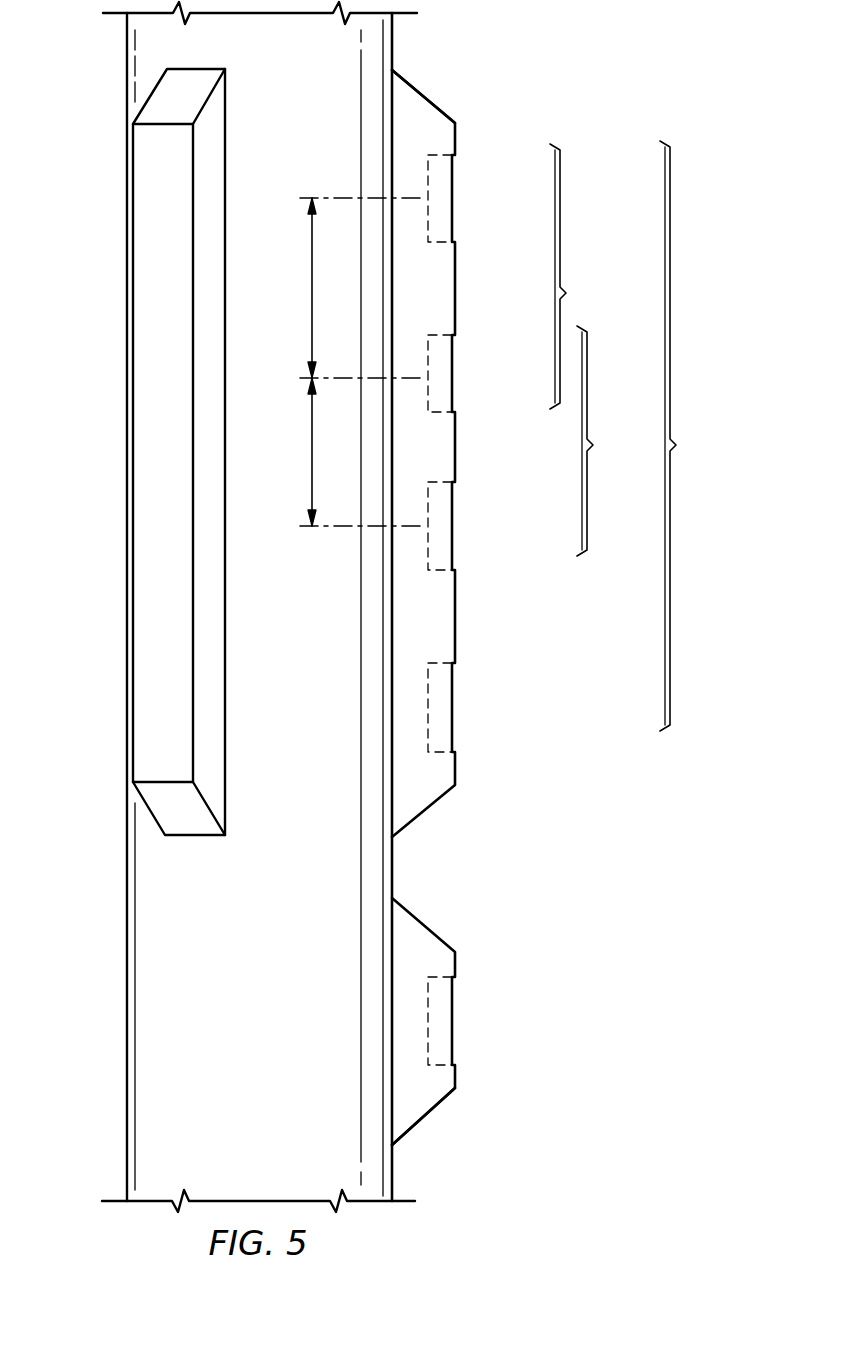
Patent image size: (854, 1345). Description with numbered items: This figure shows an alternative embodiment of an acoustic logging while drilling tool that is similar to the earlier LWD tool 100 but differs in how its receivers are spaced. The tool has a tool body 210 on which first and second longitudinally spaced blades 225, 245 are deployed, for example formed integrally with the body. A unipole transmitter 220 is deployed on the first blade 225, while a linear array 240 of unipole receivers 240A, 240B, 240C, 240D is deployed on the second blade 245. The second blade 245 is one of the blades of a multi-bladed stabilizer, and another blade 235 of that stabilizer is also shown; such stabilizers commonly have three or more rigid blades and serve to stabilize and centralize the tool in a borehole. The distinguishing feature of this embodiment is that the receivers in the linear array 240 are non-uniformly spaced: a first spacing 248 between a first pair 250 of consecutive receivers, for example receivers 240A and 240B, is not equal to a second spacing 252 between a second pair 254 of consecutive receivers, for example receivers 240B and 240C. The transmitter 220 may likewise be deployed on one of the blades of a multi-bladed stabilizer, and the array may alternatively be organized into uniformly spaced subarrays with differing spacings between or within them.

The LWD tool 100 is at (620, 95).
The tool body 210 is at (127, 982).
The unipole transmitter 220 is at (452, 1020).
The first blade 225 is at (425, 1118).
The blade 235 is at (210, 655).
The linear array 240 is at (553, 607).
The unipole receiver 240A is at (452, 180).
The unipole receiver 240B is at (452, 360).
The unipole receiver 240C is at (452, 547).
The unipole receiver 240D is at (452, 712).
The second blade 245 is at (423, 96).
The first spacing 248 is at (311, 295).
The first pair 250 is at (581, 276).
The second spacing 252 is at (311, 440).
The second pair 254 is at (607, 441).